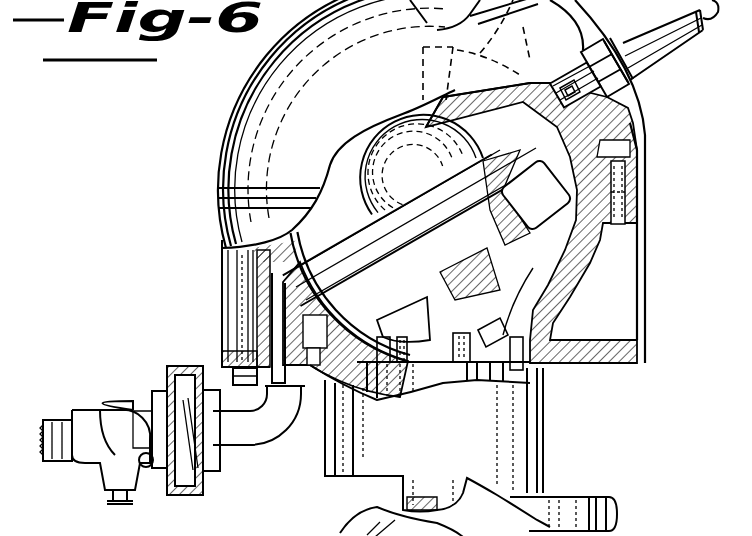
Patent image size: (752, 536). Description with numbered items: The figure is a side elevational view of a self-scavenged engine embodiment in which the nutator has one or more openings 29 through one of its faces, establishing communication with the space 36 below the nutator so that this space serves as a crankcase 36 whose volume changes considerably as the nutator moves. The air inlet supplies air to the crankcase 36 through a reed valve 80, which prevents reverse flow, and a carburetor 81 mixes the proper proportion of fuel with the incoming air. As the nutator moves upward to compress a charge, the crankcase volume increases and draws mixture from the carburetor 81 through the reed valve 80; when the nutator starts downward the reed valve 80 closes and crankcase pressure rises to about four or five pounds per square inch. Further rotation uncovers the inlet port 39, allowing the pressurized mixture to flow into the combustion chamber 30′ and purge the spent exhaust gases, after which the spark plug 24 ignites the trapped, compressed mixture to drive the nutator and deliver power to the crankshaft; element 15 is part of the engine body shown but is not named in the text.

The cylinder body / base 15 is at (443, 380).
The spark plug 24 is at (680, 43).
The opening 29 is at (521, 170).
The combustion chamber 30′ is at (345, 182).
The crankcase 36 is at (547, 260).
The inlet port 39 is at (265, 262).
The reed valve 80 is at (187, 425).
The carburetor 81 is at (85, 463).